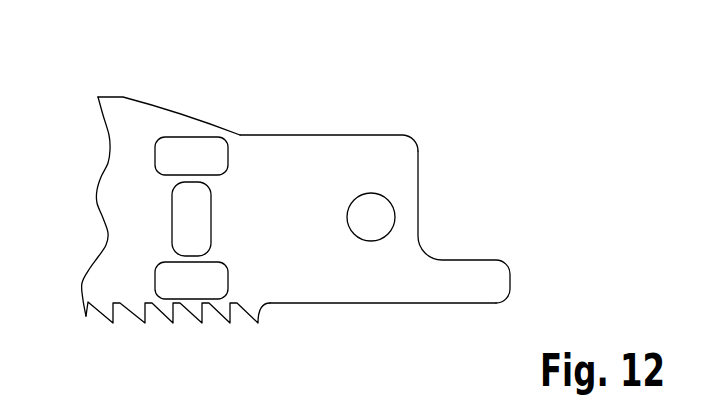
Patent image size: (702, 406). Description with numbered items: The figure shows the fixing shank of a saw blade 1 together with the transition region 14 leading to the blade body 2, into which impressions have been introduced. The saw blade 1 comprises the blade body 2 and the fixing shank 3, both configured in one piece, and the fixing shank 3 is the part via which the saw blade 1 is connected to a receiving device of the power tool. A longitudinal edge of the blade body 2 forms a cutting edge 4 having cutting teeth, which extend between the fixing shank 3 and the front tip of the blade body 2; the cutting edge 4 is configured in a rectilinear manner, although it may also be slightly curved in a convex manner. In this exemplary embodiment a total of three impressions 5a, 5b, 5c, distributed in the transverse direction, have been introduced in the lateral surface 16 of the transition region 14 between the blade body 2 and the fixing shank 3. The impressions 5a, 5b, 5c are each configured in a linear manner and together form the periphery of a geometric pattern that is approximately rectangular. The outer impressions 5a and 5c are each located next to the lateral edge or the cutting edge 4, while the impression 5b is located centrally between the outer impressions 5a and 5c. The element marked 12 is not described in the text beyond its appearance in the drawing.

The saw blade 1 is at (291, 198).
The blade body 2 is at (115, 197).
The fixing shank 3 is at (358, 288).
The cutting edge 4 is at (115, 323).
The impression 5a is at (187, 152).
The impression 5b is at (198, 220).
The impression 5c is at (192, 286).
The front end face 12 is at (140, 110).
The transition region 14 is at (148, 187).
The lateral surface 16 is at (258, 180).